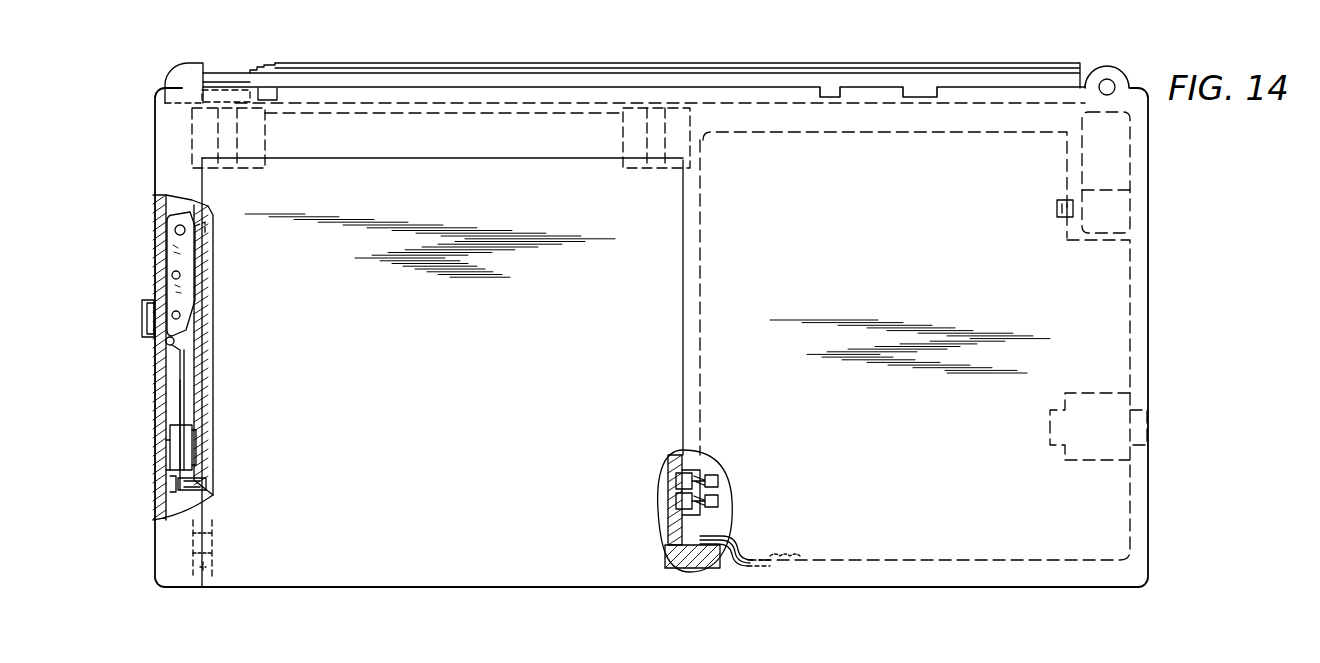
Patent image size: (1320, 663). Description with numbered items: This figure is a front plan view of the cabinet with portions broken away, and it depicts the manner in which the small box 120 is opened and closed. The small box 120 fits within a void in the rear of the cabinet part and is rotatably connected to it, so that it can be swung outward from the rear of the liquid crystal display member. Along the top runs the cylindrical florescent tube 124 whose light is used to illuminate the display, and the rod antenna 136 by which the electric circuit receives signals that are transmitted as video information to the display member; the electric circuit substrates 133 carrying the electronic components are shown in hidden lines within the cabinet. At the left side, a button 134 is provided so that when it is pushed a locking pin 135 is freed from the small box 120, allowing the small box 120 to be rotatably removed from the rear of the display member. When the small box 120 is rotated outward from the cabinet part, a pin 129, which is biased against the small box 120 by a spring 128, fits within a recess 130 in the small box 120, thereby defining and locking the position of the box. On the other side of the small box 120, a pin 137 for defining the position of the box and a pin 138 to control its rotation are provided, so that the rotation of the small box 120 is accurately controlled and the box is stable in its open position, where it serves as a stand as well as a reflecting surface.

The small box 120 is at (557, 580).
The cylindrical florescent tube 124 is at (522, 150).
The spring 128 is at (180, 440).
The pin 129 is at (172, 486).
The recess 130 is at (212, 482).
The electric circuit substrates 133 is at (870, 562).
The button 134 is at (148, 326).
The locking pin 135 is at (165, 224).
The rod antenna 136 is at (1061, 78).
The pin 137 is at (675, 479).
The pin 138 is at (680, 501).